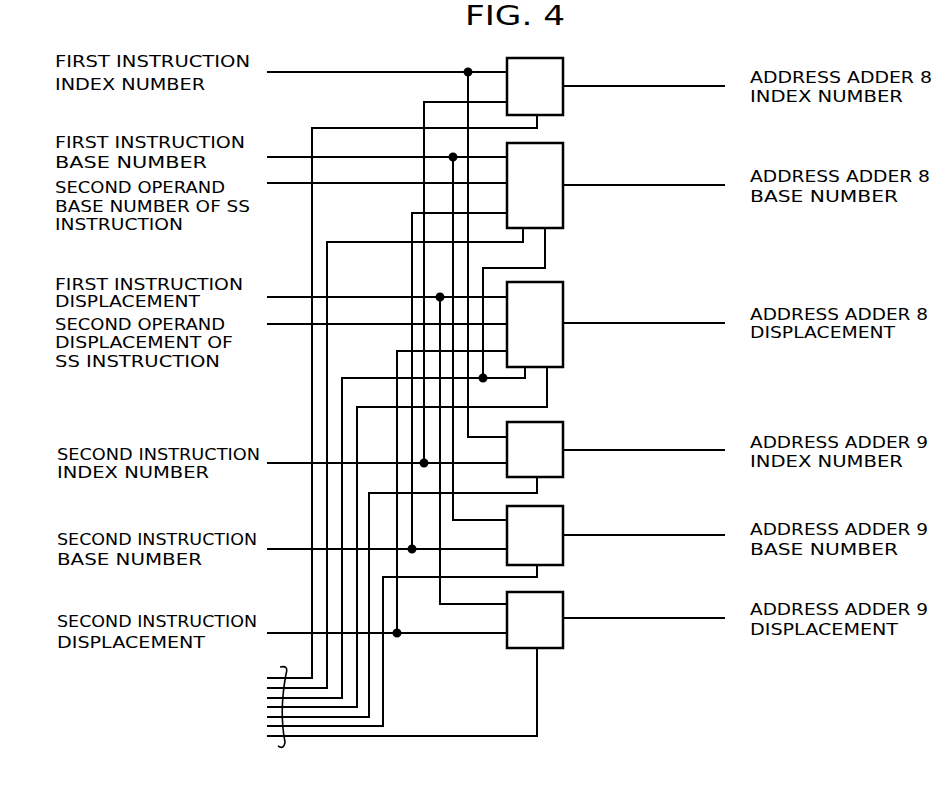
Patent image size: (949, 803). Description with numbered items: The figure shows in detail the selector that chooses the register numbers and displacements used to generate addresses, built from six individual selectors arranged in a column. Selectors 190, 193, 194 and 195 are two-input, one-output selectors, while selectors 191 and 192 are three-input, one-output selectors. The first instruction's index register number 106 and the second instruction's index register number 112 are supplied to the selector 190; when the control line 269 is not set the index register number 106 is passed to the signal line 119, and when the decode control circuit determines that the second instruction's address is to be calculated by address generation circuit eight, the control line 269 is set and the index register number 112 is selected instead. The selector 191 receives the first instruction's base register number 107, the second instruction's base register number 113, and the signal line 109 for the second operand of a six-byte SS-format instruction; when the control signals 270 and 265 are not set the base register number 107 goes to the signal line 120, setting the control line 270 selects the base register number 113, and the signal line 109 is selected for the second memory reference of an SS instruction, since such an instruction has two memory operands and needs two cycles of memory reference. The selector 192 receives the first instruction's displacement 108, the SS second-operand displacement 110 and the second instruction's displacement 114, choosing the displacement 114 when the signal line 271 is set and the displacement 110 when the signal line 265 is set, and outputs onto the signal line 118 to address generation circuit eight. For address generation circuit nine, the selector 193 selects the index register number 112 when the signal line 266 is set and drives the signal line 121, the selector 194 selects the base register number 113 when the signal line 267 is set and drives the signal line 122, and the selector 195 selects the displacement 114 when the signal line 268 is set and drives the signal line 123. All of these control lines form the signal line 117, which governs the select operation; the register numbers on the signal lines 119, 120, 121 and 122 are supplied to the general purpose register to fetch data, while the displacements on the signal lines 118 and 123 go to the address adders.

The index register number of the first instruction 106 is at (303, 72).
The base register number of the first instruction 107 is at (283, 157).
The displacement of the first instruction 108 is at (285, 297).
The signal line for second operand base number of SS instruction 109 is at (287, 183).
The displacement of the second operand of the SS instruction 110 is at (285, 324).
The index register number of the second instruction 112 is at (285, 463).
The base register number of the second instruction 113 is at (285, 549).
The displacement of the second instruction 114 is at (285, 633).
The signal line 117 is at (288, 694).
The signal line 118 is at (684, 323).
The signal line 119 is at (687, 86).
The signal line 120 is at (687, 185).
The signal line 121 is at (684, 450).
The signal line 122 is at (688, 535).
The signal line 123 is at (688, 618).
The two-input, one-output selector 190 is at (563, 62).
The three-input, one-output selector 191 is at (563, 160).
The three-input, one-output selector 192 is at (563, 298).
The two-input, one-output selector 193 is at (563, 430).
The two-input, one-output selector 194 is at (563, 518).
The two-input, one-output selector 195 is at (563, 601).
The control signal line 265 is at (547, 247).
The signal line 266 is at (540, 488).
The signal line 267 is at (540, 574).
The signal line 268 is at (540, 684).
The control line 269 is at (540, 130).
The control signal line 270 is at (331, 242).
The signal line 271 is at (549, 388).